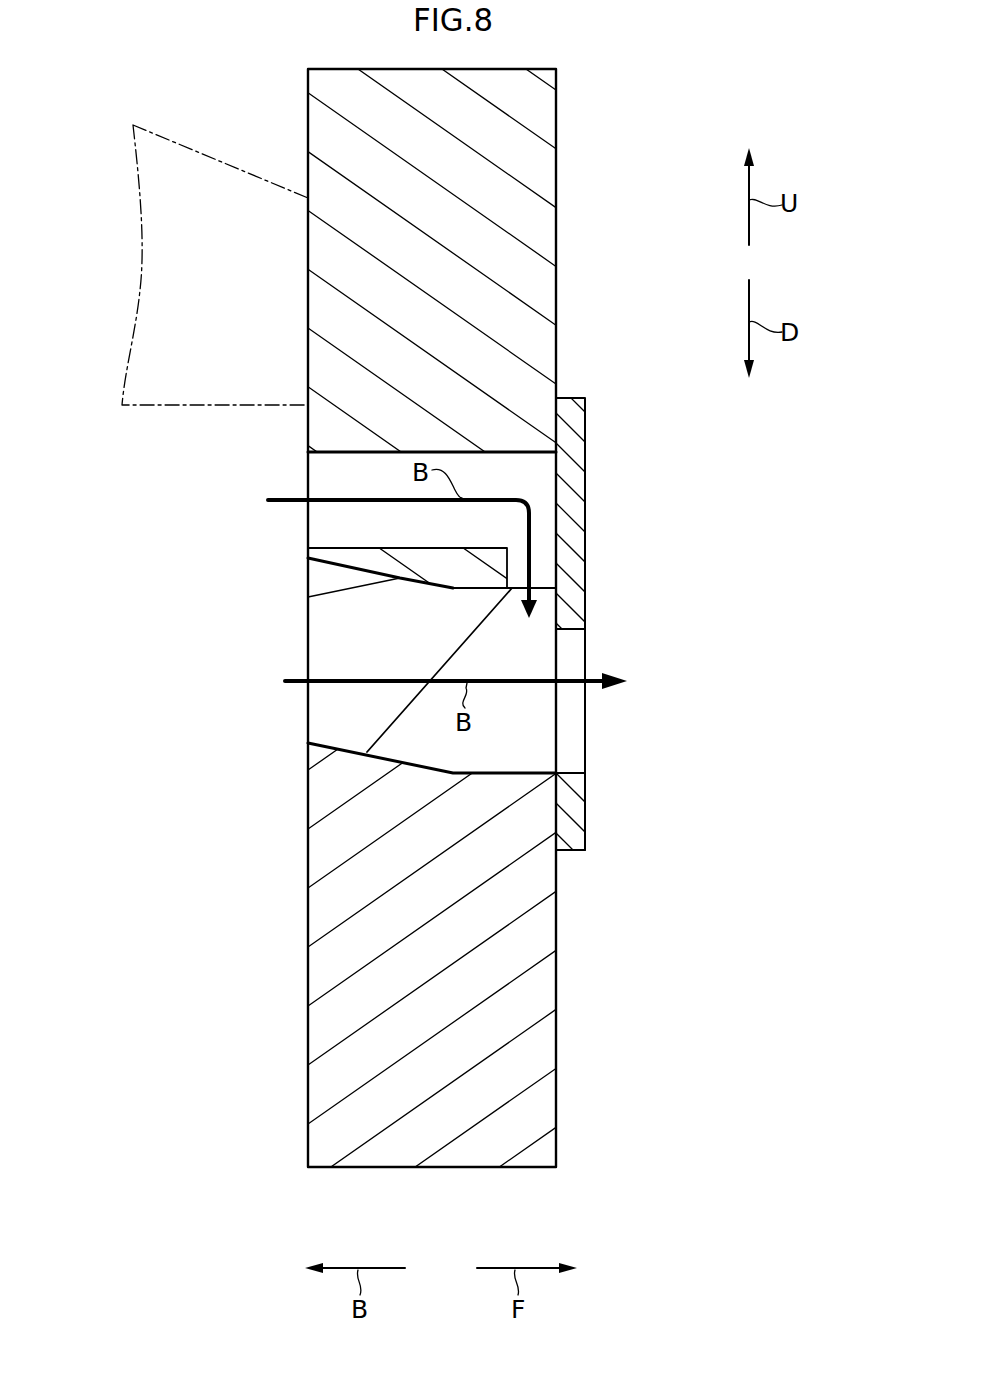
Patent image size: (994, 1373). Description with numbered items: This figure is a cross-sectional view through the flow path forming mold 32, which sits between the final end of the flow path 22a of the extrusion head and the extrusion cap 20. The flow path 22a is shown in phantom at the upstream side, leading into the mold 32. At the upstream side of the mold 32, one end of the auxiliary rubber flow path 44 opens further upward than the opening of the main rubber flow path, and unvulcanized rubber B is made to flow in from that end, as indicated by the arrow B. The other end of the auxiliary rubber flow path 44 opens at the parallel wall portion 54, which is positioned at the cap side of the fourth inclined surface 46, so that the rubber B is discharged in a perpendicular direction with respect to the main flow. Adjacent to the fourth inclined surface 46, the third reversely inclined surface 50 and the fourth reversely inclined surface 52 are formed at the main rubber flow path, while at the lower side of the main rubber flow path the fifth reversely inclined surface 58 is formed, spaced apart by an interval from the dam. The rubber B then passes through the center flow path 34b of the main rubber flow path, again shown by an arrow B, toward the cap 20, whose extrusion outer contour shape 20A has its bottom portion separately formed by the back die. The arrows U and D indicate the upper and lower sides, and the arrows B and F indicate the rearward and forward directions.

The flow path forming mold 32 is at (437, 1169).
The auxiliary rubber flow path 44 is at (337, 458).
The fourth inclined surface 46 is at (326, 562).
The third reversely inclined surface 50 is at (334, 596).
The parallel wall portion 54 is at (481, 590).
The fourth reversely inclined surface 52 is at (476, 632).
The fifth reversely inclined surface 58 is at (347, 748).
The extrusion cap 20 is at (586, 572).
The extrusion outer contour shape 20A is at (567, 773).
The flow path 34b is at (515, 710).
The flow path 22a is at (142, 135).